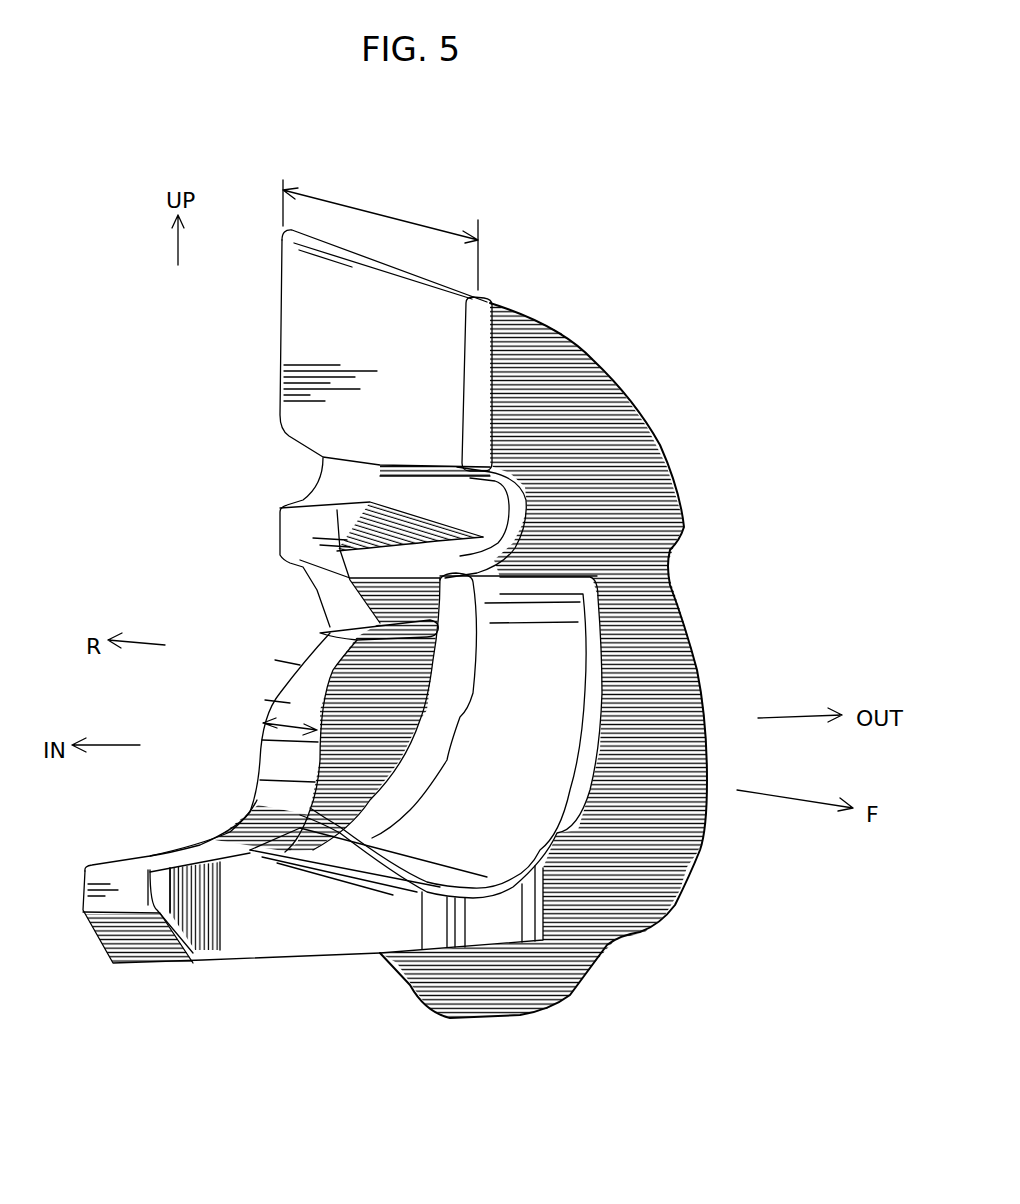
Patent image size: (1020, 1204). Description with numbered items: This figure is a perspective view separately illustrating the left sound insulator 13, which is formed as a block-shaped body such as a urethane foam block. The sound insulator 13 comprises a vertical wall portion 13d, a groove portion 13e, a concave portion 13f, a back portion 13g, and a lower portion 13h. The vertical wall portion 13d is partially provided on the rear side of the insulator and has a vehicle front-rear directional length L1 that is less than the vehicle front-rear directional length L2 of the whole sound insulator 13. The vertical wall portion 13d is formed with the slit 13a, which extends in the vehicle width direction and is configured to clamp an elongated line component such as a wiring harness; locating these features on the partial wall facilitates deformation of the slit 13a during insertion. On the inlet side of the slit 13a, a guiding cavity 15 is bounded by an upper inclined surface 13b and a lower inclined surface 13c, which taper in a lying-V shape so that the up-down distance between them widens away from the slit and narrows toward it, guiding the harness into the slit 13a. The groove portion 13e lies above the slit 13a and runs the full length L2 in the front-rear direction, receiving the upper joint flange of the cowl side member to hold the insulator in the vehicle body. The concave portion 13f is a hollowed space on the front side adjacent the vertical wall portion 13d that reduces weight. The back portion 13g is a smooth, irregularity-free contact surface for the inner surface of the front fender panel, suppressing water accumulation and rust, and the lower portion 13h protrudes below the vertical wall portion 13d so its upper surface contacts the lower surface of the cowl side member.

The sound insulator 13 is at (712, 527).
The slit 13a is at (410, 637).
The upper inclined surface 13b is at (318, 576).
The lower inclined surface 13c is at (303, 693).
The vertical wall portion 13d is at (403, 721).
The groove portion 13e is at (423, 507).
The concave portion 13f is at (462, 823).
The back portion 13g is at (617, 378).
The lower portion 13h is at (207, 910).
The guiding cavity 15 is at (287, 642).
The vehicle front-rear directional length of the vertical wall portion L1 is at (293, 727).
The vehicle front-rear directional length of the sound insulator L2 is at (380, 215).